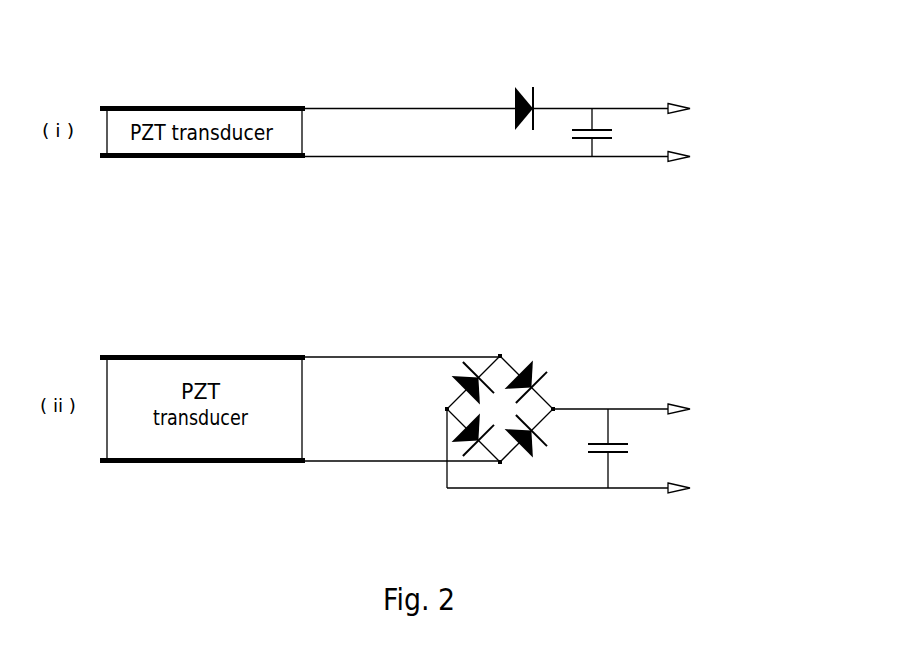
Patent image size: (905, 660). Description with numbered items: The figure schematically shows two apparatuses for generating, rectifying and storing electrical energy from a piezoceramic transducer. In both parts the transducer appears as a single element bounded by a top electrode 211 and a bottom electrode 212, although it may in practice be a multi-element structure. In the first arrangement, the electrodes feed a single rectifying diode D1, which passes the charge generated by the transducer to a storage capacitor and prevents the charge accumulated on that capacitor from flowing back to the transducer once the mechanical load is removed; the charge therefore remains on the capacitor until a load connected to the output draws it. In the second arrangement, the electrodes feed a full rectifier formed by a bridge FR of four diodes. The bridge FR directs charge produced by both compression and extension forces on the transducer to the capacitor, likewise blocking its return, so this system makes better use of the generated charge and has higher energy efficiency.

The top electrode 211 is at (205, 106).
The bottom electrode 212 is at (190, 158).
The rectifying diode D1 is at (518, 87).
The rectifying bridge FR is at (568, 357).